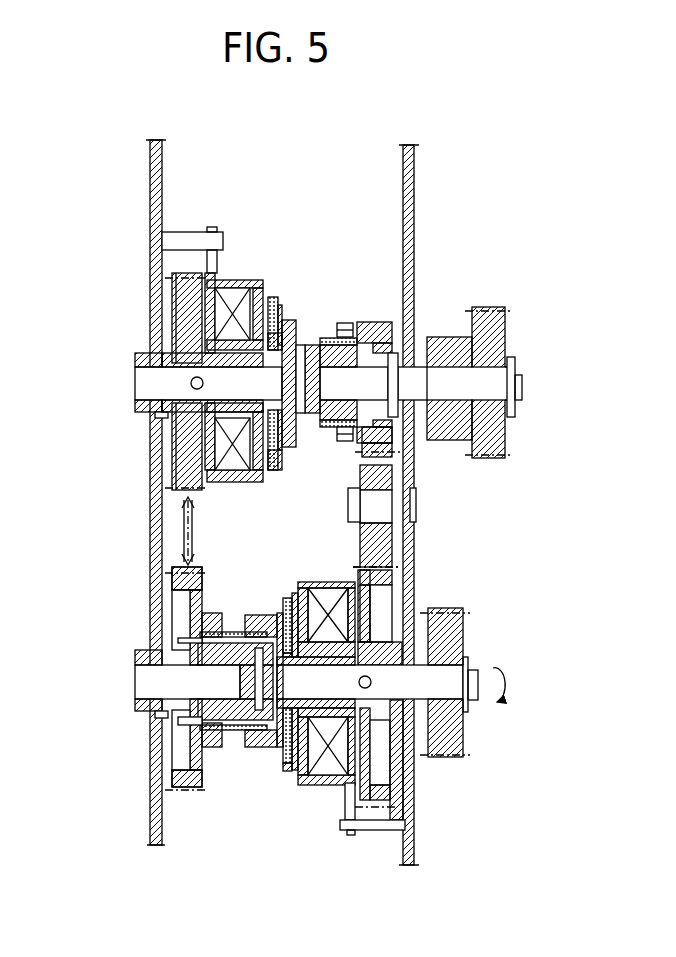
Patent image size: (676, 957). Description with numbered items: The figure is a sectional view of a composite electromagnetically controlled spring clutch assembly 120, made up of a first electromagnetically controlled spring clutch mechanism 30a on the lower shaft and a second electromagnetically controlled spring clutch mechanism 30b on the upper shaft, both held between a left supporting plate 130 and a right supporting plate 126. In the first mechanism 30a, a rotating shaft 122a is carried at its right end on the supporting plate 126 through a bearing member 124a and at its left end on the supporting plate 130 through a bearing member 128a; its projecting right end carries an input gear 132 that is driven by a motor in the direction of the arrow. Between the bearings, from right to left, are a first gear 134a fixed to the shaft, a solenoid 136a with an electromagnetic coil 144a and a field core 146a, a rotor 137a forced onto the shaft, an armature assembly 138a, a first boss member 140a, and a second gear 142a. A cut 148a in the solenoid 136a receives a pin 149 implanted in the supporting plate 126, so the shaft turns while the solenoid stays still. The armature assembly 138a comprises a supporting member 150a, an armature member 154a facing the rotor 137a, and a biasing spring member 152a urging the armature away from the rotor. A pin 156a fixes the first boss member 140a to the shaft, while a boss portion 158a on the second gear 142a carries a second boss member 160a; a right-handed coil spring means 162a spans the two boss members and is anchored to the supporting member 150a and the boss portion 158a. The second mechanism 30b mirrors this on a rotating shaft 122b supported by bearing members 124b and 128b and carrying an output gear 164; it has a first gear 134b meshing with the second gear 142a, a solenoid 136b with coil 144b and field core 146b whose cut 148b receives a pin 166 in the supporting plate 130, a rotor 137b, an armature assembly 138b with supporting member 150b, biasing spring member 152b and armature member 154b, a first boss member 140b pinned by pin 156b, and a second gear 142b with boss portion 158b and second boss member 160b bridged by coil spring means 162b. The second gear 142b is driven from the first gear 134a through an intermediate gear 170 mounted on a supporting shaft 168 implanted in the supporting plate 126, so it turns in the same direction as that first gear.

The first electromagnetically controlled spring clutch mechanism 30a is at (264, 860).
The second electromagnetically controlled spring clutch mechanism 30b is at (302, 168).
The composite electromagnetically controlled spring clutch assembly 120 is at (492, 530).
The rotating shaft 122a is at (138, 695).
The rotating shaft 122b is at (450, 395).
The bearing member 124a is at (445, 757).
The bearing member 124b is at (416, 355).
The supporting plate 126 is at (414, 222).
The bearing member 128a is at (175, 638).
The bearing member 128b is at (163, 348).
The supporting plate 130 is at (150, 242).
The input gear 132 is at (458, 735).
The first gear 134a is at (390, 790).
The first gear 134b is at (180, 440).
The solenoid 136a is at (330, 790).
The solenoid 136b is at (215, 490).
The rotor 137a is at (296, 596).
The rotor 137b is at (268, 472).
The armature assembly 138a is at (276, 608).
The armature assembly 138b is at (298, 318).
The first boss member 140a is at (252, 740).
The first boss member 140b is at (325, 340).
The second gear 142a is at (178, 580).
The second gear 142b is at (393, 353).
The electromagnetic coil 144a is at (330, 592).
The electromagnetic coil 144b is at (232, 300).
The field core 146a is at (315, 788).
The field core 146b is at (245, 282).
The cut 148a is at (343, 822).
The cut 148b is at (205, 263).
The pin 149 is at (383, 830).
The supporting member 150a is at (258, 760).
The supporting member 150b is at (300, 425).
The biasing spring member 152a is at (287, 598).
The biasing spring member 152b is at (275, 300).
The armature member 154a is at (288, 765).
The armature member 154b is at (280, 302).
The pin 156a is at (250, 632).
The pin 156b is at (356, 322).
The boss portion 158a is at (210, 618).
The boss portion 158b is at (385, 455).
The second boss member 160a is at (187, 722).
The second boss member 160b is at (352, 326).
The coil spring means 162a is at (205, 775).
The coil spring means 162b is at (378, 468).
The output gear 164 is at (497, 345).
The pin 166 is at (188, 238).
The supporting shaft 168 is at (382, 520).
The intermediate gear 170 is at (395, 567).